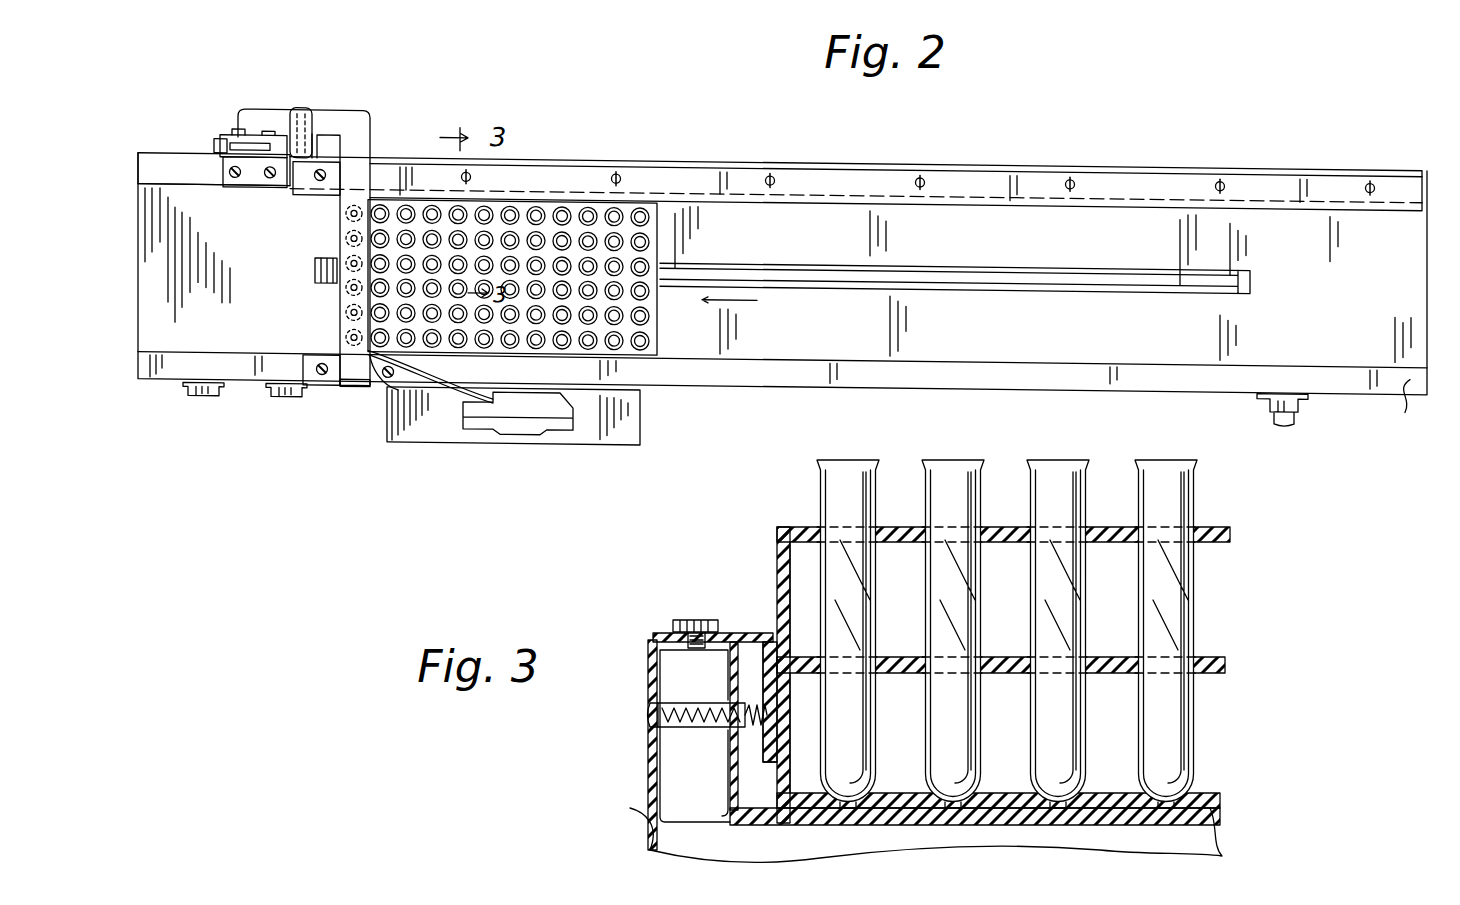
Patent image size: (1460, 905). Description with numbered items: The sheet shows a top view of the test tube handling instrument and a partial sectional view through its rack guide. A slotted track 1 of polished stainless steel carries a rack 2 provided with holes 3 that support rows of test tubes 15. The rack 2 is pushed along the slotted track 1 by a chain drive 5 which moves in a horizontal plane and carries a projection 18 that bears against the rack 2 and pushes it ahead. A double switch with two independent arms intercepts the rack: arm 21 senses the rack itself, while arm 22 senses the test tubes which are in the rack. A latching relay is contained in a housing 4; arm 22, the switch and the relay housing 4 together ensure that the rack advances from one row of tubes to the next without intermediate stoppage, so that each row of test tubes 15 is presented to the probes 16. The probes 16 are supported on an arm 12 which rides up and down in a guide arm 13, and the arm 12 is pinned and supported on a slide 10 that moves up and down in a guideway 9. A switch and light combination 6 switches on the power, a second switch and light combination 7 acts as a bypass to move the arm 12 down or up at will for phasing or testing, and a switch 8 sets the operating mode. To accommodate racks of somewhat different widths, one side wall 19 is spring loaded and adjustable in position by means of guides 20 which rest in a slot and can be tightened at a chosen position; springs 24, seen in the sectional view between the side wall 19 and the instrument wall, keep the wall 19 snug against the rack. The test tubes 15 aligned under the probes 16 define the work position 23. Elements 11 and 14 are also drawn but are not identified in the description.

In FIG. 2, the slotted track 1 is at (1432, 180).
In FIG. 3, the slotted track 1 is at (742, 806).
In FIG. 2, the rack 2 is at (1405, 392).
In FIG. 3, the rack 2 is at (737, 824).
In FIG. 2, the holes 3 is at (531, 429).
In FIG. 2, the housing 4 is at (641, 420).
In FIG. 2, the chain drive 5 is at (1012, 255).
In FIG. 2, the switch and light combination 6 is at (1300, 405).
In FIG. 2, the switch and light combination 7 is at (288, 394).
In FIG. 2, the switch 8 is at (206, 394).
In FIG. 2, the guideway 9 is at (214, 142).
In FIG. 2, the slide 10 is at (252, 132).
In FIG. 2, the arm 11 is at (303, 130).
In FIG. 2, the arm 12 is at (340, 301).
In FIG. 2, the guide arm 13 is at (358, 382).
In FIG. 2, the upper plate 14 is at (557, 200).
In FIG. 3, the upper plate 14 is at (776, 529).
In FIG. 2, the test tubes 15 is at (641, 200).
In FIG. 3, the test tubes 15 is at (1088, 478).
In FIG. 2, the probes 16 is at (348, 233).
In FIG. 2, the projection 18 is at (687, 214).
In FIG. 2, the side wall 19 is at (1150, 194).
In FIG. 3, the side wall 19 is at (768, 641).
In FIG. 2, the guides 20 is at (908, 166).
In FIG. 3, the guides 20 is at (694, 619).
In FIG. 2, the arm 21 is at (406, 386).
In FIG. 2, the arm 22 is at (437, 384).
In FIG. 2, the work position 23 is at (640, 318).
In FIG. 3, the work position 23 is at (1180, 528).
In FIG. 3, the springs 24 is at (748, 728).